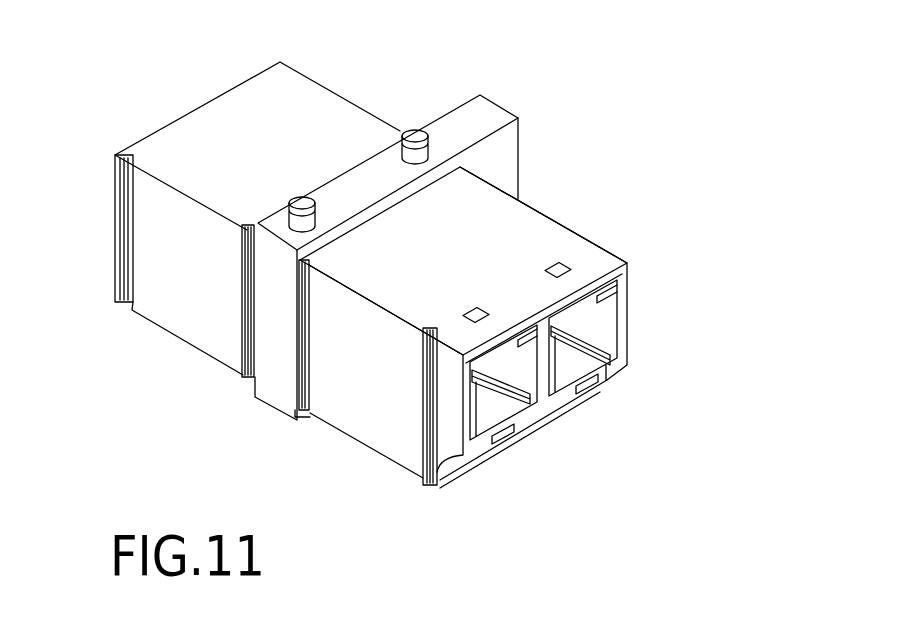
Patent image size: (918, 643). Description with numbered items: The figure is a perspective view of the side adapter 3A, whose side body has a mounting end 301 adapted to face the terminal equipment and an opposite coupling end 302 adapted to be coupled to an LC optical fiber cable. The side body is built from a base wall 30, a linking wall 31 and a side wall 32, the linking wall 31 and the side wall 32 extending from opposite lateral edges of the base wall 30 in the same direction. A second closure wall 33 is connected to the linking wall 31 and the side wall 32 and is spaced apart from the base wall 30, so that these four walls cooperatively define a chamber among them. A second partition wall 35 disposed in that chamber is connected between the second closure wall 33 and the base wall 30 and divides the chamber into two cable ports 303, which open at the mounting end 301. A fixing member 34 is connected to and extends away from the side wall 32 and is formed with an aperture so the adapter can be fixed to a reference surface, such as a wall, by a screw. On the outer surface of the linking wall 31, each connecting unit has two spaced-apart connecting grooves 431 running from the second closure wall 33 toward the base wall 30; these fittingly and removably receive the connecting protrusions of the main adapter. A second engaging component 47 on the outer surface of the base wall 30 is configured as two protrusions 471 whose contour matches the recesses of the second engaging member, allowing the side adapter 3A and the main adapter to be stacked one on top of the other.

The side adapter 3A is at (597, 110).
The base wall 30 is at (520, 248).
The mounting end 301 is at (655, 304).
The coupling end 302 is at (190, 90).
The cable ports 303 is at (512, 436).
The linking wall 31 is at (355, 430).
The side wall 32 is at (610, 248).
The second closure wall 33 is at (455, 478).
The fixing member 34 is at (500, 92).
The second partition wall 35 is at (553, 395).
The connecting grooves 431 is at (245, 358).
The second engaging component 47 is at (420, 118).
The protrusions 471 is at (318, 205).